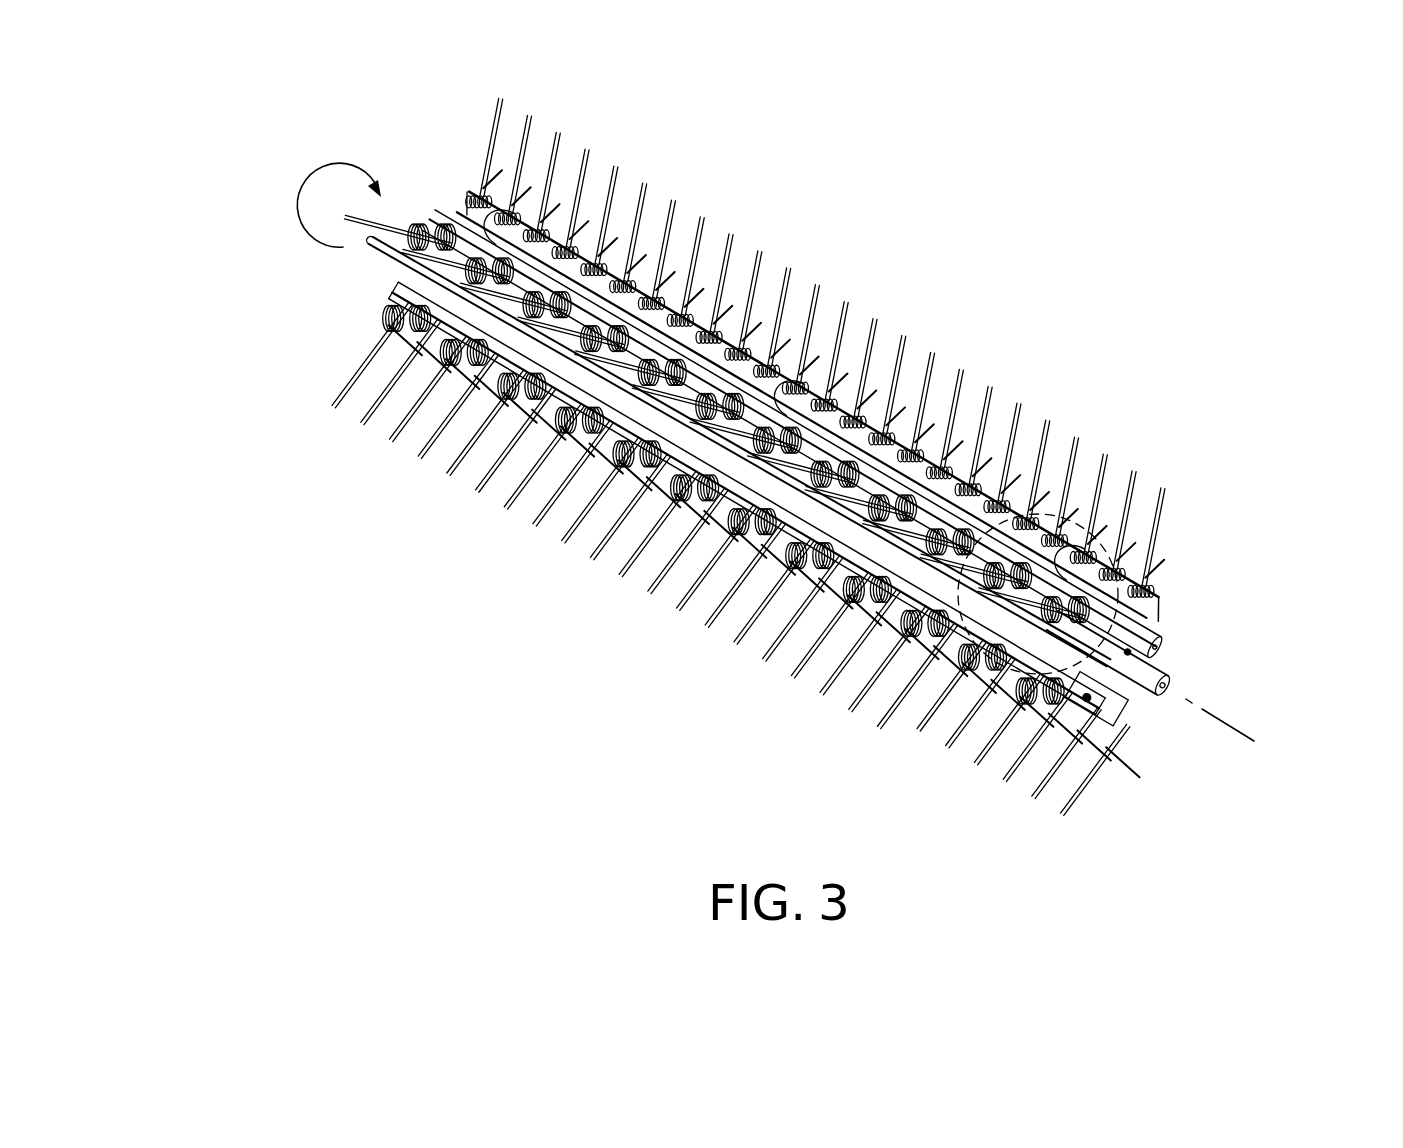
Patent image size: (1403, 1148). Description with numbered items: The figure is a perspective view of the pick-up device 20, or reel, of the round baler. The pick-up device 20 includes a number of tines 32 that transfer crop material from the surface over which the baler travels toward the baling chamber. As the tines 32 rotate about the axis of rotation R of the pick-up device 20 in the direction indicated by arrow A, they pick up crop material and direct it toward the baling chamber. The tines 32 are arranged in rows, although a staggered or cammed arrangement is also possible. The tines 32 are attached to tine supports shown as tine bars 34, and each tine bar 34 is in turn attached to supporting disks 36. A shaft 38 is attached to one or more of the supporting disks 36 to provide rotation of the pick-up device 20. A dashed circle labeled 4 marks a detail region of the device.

The pick-up device 20 is at (668, 148).
The tines 32 is at (590, 510).
The tine bars 34 is at (963, 493).
The supporting disks 36 is at (733, 458).
The shaft 38 is at (1167, 667).
The detail region of FIG. 4 is at (1155, 530).
The arrow indicating direction of rotation A is at (303, 207).
The axis of rotation R is at (1243, 735).